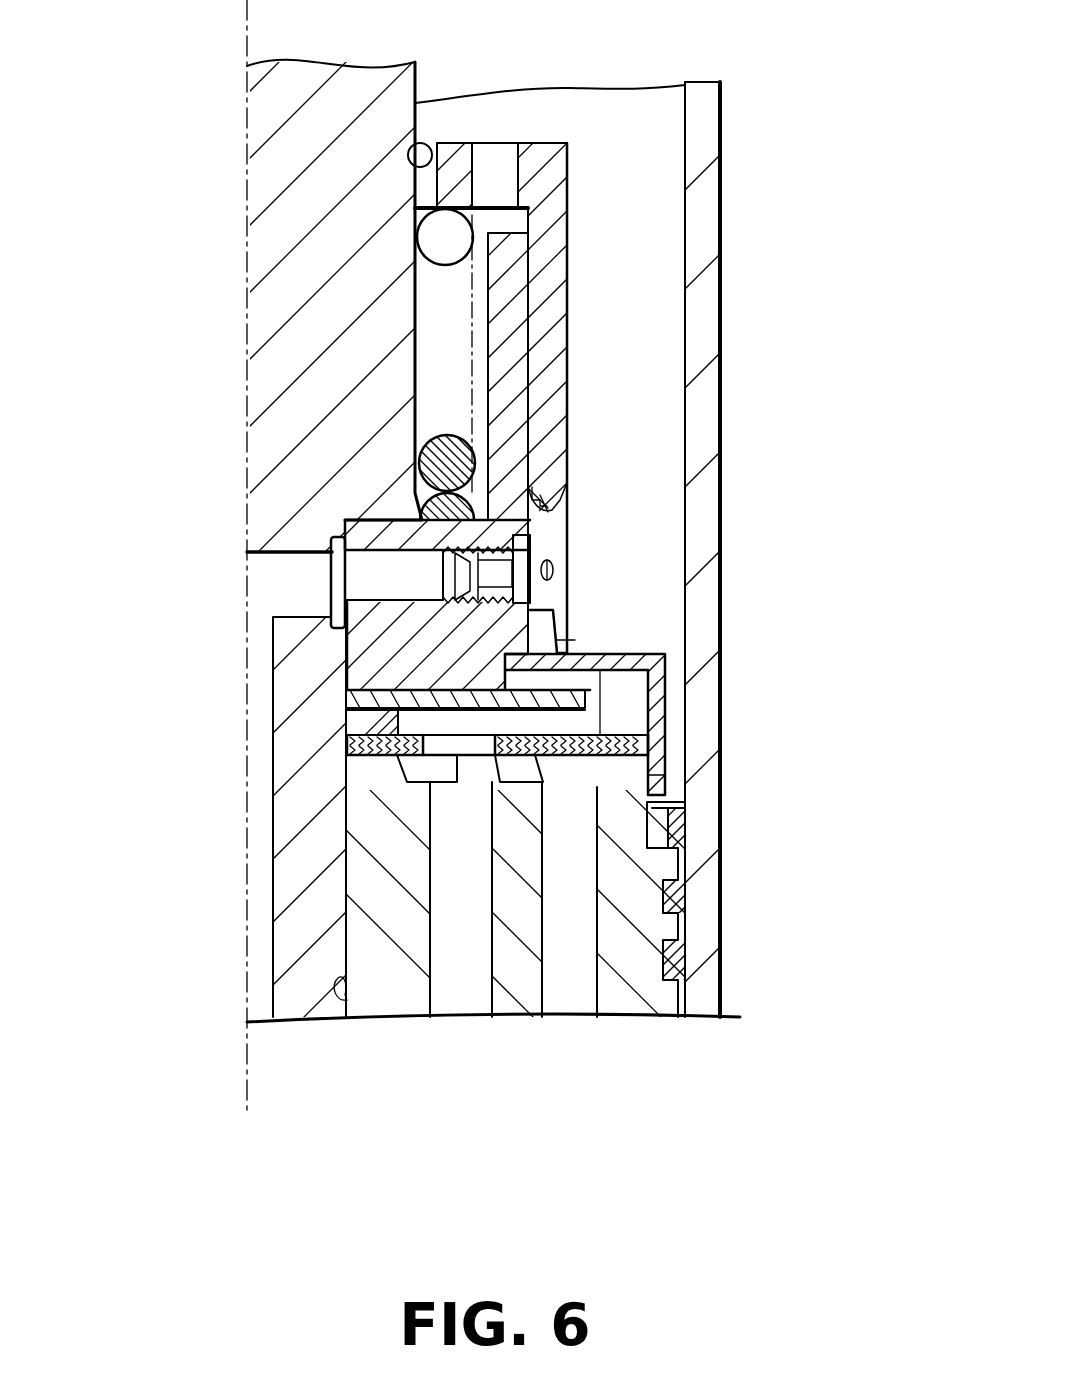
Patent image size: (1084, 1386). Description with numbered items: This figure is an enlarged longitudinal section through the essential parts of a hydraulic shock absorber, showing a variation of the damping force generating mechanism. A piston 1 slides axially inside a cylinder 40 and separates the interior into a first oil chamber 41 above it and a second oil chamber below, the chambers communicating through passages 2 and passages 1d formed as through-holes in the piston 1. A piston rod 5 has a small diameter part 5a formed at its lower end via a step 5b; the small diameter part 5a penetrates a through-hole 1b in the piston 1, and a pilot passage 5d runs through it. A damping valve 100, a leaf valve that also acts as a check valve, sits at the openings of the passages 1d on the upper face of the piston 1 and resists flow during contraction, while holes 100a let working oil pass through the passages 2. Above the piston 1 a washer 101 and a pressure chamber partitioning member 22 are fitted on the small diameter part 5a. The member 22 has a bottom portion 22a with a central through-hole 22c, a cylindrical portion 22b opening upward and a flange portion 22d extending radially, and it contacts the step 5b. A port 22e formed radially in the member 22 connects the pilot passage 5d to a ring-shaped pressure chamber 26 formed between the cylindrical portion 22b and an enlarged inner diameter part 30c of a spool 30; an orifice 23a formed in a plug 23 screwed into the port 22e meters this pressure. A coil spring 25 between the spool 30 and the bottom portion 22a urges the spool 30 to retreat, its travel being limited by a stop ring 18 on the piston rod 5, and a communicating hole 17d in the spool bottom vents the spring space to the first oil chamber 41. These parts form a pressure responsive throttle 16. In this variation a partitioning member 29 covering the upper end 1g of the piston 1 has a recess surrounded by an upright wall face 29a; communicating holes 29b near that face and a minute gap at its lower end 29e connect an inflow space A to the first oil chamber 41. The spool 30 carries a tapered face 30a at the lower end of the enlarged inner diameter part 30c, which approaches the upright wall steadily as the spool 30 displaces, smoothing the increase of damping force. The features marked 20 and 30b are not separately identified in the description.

The piston 1 is at (542, 693).
The through-hole 1b is at (377, 1017).
The passages 1d is at (582, 885).
The upper end of the piston 1g is at (688, 802).
The passages 2 is at (463, 985).
The piston rod 5 is at (246, 389).
The small diameter part 5a is at (288, 889).
The step 5b is at (333, 535).
The pilot passage 5d is at (262, 953).
The pressure responsive throttle 16 is at (578, 636).
The communicating hole 17d is at (490, 157).
The stop ring 18 is at (420, 143).
The pipe 20 is at (548, 747).
The pressure chamber partitioning member 22 is at (542, 627).
The bottom portion 22a is at (538, 637).
The cylindrical portion 22b is at (490, 325).
The through-hole 22c is at (345, 528).
The flange portion 22d is at (470, 607).
The port 22e is at (378, 566).
The plug 23 is at (318, 592).
The orifice 23a is at (532, 535).
The coil spring 25 is at (430, 237).
The pressure chamber 26 is at (545, 497).
The partitioning member 29 is at (542, 693).
The upright wall face 29a is at (575, 654).
The communicating holes 29b is at (545, 712).
The lower end 29e is at (668, 776).
The spool 30 is at (709, 434).
The tapered face 30a is at (567, 627).
The plate notch 30b is at (548, 512).
The enlarged inner diameter part 30c is at (553, 568).
The cylinder 40 is at (710, 178).
The first oil chamber 41 is at (605, 170).
The damping valve 100 is at (649, 745).
The holes 100a is at (450, 752).
The washer 101 is at (347, 726).
The inflow space A is at (615, 705).